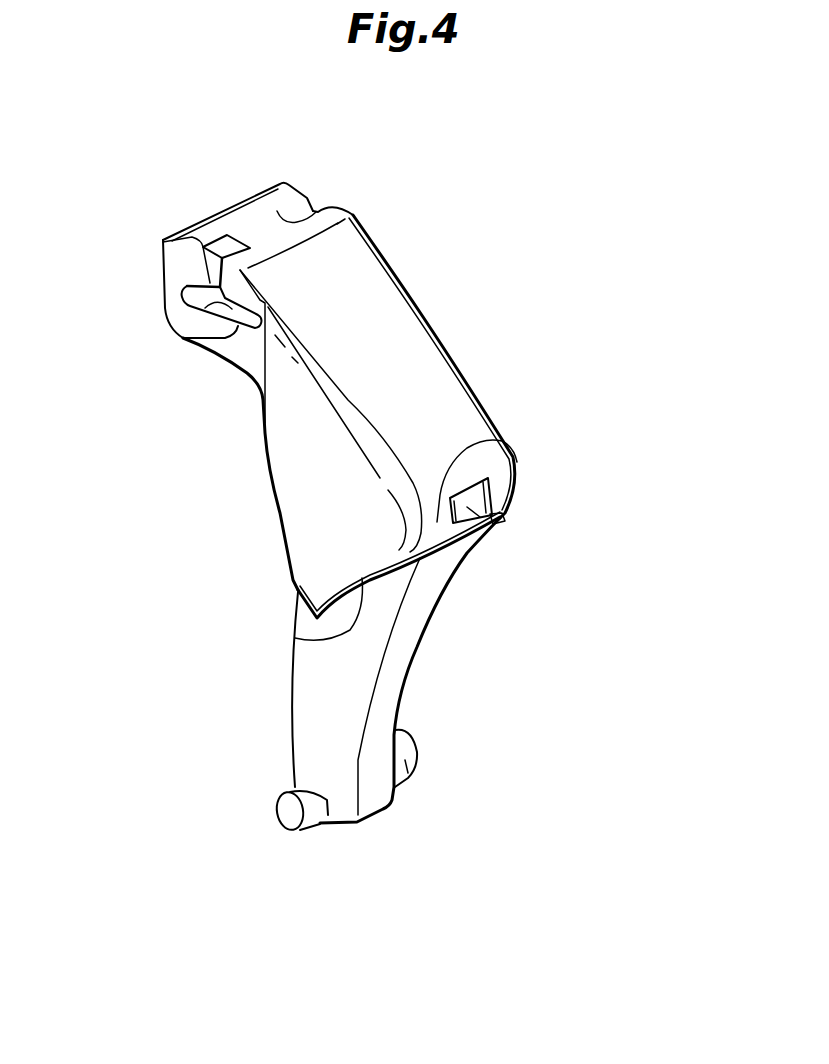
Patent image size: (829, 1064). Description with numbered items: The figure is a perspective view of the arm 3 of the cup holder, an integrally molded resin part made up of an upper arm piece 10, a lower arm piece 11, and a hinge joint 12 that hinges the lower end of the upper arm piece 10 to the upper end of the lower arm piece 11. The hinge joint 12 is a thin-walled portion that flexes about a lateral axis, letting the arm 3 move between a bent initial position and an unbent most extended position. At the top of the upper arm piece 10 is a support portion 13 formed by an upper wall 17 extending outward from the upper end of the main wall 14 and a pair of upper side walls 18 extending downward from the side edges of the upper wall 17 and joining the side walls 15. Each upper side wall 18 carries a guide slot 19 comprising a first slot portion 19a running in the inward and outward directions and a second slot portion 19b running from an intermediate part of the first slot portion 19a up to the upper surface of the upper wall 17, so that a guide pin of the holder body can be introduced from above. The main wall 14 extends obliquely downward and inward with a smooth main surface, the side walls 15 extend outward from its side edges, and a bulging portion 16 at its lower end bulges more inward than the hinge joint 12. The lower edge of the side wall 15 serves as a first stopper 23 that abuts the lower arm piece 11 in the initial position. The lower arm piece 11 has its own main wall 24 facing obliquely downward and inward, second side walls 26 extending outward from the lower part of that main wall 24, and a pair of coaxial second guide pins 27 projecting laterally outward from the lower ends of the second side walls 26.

The arm 3 is at (433, 173).
The upper arm piece 10 is at (447, 340).
The lower arm piece 11 is at (407, 682).
The hinge joint 12 is at (492, 522).
The support portion 13 is at (222, 123).
The main wall 14 is at (390, 298).
The side walls 15 is at (290, 472).
The bulging portion 16 is at (437, 513).
The upper wall 17 is at (205, 233).
The upper side walls 18 is at (178, 258).
The guide slot 19 is at (73, 278).
The first slot portion 19a is at (178, 340).
The second slot portion 19b is at (187, 287).
The first stopper 23 is at (303, 634).
The main wall 24 is at (413, 617).
The second side walls 26 is at (307, 723).
The second guide pins 27 is at (412, 775).